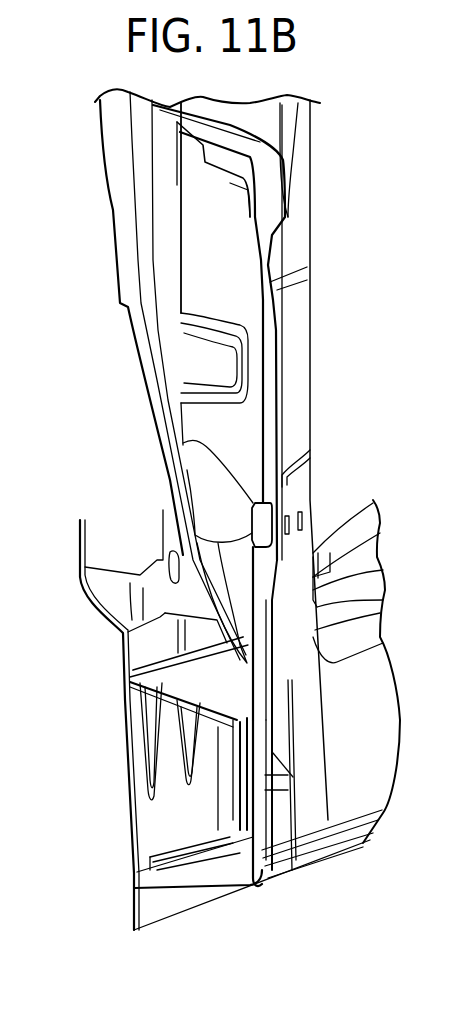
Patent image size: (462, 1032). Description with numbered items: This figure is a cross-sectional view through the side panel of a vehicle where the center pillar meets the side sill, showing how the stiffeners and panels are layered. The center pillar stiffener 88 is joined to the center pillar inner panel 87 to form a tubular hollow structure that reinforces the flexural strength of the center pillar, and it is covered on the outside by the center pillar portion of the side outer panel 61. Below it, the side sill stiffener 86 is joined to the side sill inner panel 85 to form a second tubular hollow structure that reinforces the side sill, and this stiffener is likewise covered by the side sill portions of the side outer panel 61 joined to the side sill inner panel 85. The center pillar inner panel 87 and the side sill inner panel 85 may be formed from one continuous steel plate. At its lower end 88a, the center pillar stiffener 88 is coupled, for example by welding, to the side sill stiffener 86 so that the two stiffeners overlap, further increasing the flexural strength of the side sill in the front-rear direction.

The center pillar inner panel 87 is at (117, 277).
The center pillar stiffener 88 is at (270, 212).
The side outer panel 61 is at (303, 417).
The side sill inner panel 85 is at (118, 742).
The side sill stiffener 86 is at (220, 696).
The lower end 88a is at (292, 870).